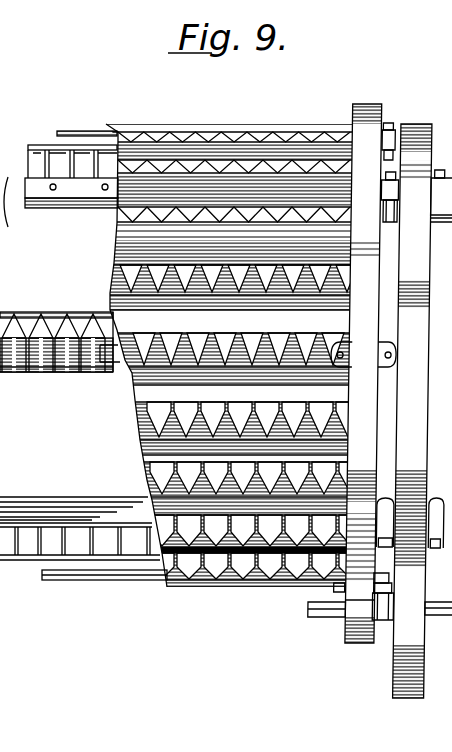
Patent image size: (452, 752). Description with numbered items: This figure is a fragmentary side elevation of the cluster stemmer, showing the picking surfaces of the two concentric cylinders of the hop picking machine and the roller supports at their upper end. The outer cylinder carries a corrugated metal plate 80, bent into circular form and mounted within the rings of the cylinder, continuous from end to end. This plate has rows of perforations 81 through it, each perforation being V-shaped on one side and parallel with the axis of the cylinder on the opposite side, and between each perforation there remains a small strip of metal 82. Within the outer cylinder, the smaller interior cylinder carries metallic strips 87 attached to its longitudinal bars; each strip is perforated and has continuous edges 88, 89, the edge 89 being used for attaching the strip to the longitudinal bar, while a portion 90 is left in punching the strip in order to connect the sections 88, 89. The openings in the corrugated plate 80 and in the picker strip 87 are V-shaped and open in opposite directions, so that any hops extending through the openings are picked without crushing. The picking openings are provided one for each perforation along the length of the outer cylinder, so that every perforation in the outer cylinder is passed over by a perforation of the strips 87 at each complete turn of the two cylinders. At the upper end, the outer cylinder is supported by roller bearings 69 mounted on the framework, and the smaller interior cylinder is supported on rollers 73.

The roller bearings 69 is at (392, 678).
The rollers 73 is at (349, 633).
The corrugated metal plate 80 is at (118, 243).
The perforations 81 is at (160, 478).
The strip of metal 82 is at (226, 338).
The metallic strips 87 is at (12, 314).
The continuous edge 88 is at (44, 314).
The continuous edge 89 is at (21, 372).
The connecting portion 90 is at (40, 362).